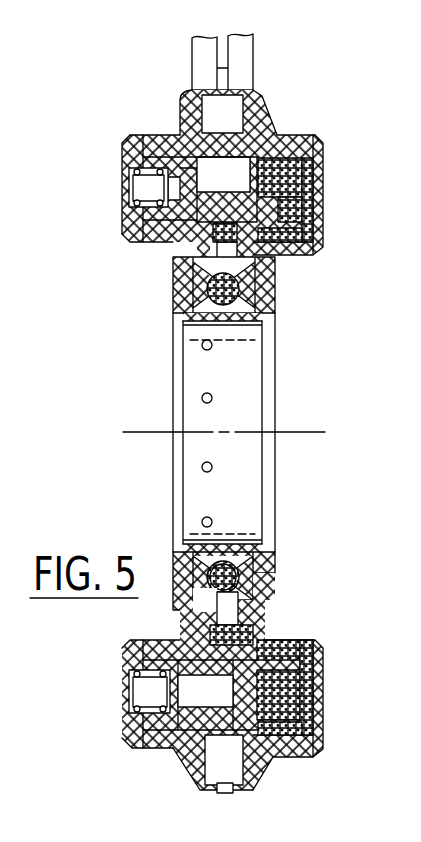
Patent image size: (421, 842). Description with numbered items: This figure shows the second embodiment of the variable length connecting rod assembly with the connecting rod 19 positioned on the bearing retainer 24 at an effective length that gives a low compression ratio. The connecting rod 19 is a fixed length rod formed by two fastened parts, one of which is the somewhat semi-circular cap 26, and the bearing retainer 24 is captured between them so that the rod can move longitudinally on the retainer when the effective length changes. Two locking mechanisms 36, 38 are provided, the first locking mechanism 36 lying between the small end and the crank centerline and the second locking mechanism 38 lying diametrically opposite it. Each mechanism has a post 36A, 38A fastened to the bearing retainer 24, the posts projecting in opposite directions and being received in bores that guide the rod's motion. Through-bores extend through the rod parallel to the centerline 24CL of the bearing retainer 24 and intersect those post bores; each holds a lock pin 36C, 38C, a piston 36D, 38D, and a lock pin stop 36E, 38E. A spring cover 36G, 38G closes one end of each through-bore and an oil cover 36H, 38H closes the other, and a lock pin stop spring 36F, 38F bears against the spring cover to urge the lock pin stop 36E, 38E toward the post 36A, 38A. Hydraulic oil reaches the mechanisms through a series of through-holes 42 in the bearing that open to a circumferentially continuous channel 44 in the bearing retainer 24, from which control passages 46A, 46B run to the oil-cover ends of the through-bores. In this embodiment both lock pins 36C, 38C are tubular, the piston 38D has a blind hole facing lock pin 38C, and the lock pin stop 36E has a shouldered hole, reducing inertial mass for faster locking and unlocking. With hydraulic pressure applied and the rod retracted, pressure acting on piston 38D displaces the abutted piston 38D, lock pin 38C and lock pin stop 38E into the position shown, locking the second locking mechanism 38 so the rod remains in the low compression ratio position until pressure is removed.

The fixed length connecting rod 19 is at (256, 47).
The bearing retainer 24 is at (276, 314).
The centerline 24CL is at (296, 430).
The cap 26 is at (262, 588).
The locking mechanism 36 is at (222, 166).
The post 36A is at (247, 118).
The lock pin 36C is at (181, 130).
The piston 36D is at (277, 136).
The lock pin stop 36E is at (133, 240).
The lock pin stop spring 36F is at (130, 206).
The spring cover 36G is at (130, 136).
The oil cover 36H is at (324, 144).
The locking mechanism 38 is at (219, 657).
The post 38A is at (173, 639).
The lock pin 38C is at (145, 731).
The piston 38D is at (302, 712).
The lock pin stop 38E is at (130, 720).
The lock pin stop spring 38F is at (130, 690).
The spring cover 38G is at (130, 652).
The oil cover 38H is at (324, 640).
The through-holes 42 is at (203, 395).
The channel 44 is at (232, 288).
The control passage 46A is at (278, 232).
The control passage 46B is at (312, 650).